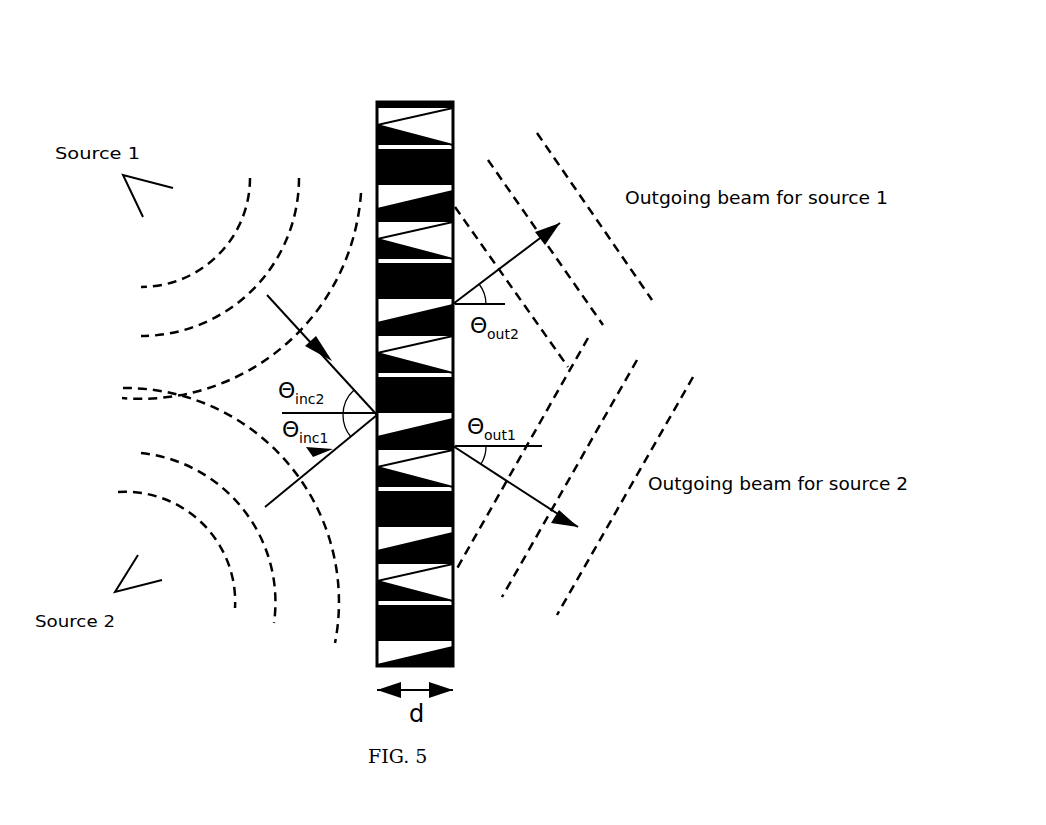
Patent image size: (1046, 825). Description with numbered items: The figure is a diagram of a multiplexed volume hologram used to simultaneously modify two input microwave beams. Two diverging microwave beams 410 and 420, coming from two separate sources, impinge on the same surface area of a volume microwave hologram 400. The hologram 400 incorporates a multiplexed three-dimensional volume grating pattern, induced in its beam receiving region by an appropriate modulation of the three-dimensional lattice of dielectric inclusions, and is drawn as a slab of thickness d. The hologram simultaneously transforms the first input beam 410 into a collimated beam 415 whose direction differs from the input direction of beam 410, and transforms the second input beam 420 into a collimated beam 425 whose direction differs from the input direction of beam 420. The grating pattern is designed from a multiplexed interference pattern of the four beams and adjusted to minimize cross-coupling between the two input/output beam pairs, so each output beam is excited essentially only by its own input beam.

The volume microwave hologram 400 is at (395, 112).
The diverging microwave beam 410 is at (275, 187).
The collimated beam 415 is at (550, 183).
The diverging microwave beam 420 is at (303, 623).
The collimated beam 425 is at (560, 567).